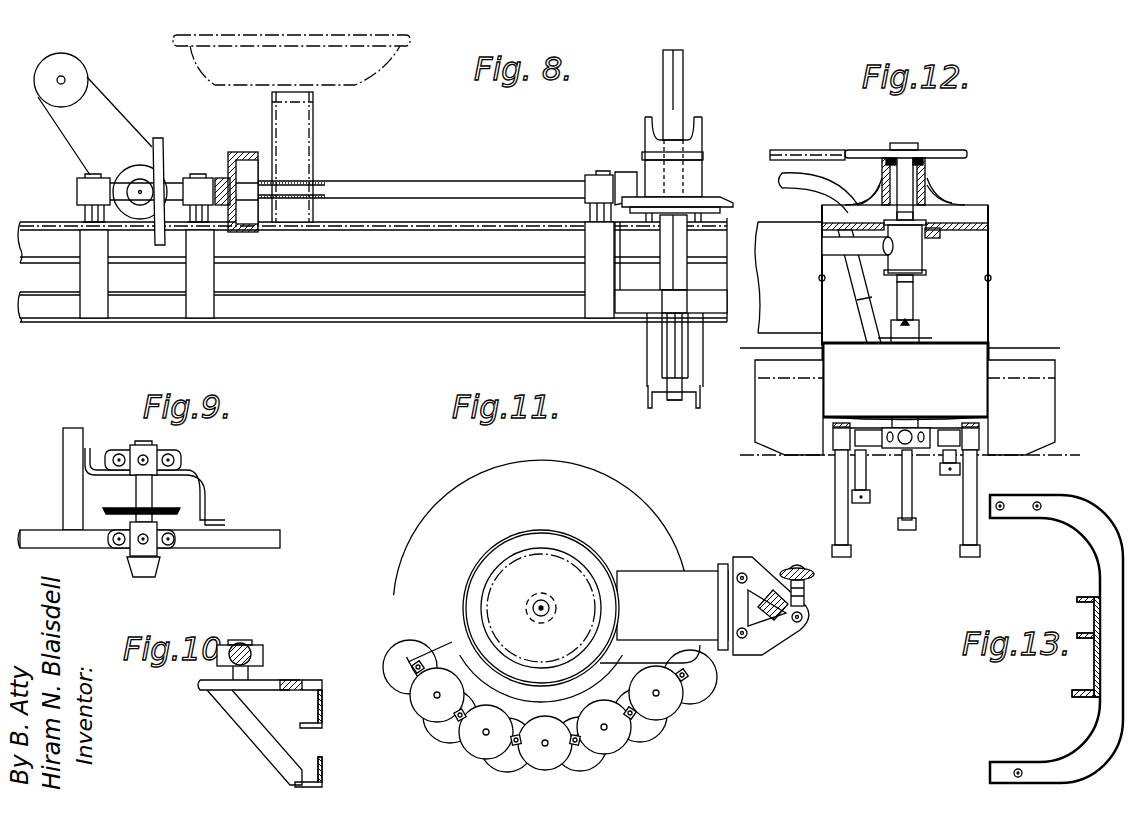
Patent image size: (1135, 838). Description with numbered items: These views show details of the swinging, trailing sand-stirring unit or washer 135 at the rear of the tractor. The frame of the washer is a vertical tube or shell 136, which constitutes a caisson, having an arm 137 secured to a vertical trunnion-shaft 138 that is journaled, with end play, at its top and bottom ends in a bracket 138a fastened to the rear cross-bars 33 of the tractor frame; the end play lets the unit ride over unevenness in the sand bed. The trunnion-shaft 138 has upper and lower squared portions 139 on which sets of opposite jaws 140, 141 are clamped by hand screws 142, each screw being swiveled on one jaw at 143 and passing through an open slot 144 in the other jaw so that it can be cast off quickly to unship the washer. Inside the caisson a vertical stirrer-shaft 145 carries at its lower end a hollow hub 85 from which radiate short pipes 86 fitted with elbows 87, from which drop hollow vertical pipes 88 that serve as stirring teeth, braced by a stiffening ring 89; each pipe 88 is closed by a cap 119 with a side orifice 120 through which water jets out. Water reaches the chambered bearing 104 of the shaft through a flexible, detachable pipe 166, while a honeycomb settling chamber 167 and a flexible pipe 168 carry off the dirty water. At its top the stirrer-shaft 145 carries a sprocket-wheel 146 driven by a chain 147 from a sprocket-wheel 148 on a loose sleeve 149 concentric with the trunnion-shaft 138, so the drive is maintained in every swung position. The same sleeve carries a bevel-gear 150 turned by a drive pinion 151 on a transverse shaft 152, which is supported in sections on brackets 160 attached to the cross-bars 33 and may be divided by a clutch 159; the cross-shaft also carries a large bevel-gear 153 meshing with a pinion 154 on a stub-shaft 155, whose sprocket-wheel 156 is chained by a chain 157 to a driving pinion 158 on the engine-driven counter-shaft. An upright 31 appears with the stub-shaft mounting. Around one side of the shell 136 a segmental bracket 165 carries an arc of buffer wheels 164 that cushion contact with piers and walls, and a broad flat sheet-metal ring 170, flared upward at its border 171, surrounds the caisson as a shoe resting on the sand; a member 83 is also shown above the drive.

In FIG. 9, the upright post 31 is at (75, 428).
In FIG. 8, the rear cross-bars 33 is at (372, 270).
In FIG. 9, the rear cross-bars 33 is at (283, 540).
In FIG. 10, the rear cross-bars 33 is at (322, 745).
In FIG. 13, the rear cross-bars 33 is at (1080, 640).
In FIG. 8, the dish 83 is at (353, 38).
In FIG. 12, the hollow head or hub 85 is at (890, 448).
In FIG. 12, the short pipes 86 is at (868, 428).
In FIG. 12, the elbows 87 is at (833, 440).
In FIG. 12, the vertical pipes 88 is at (963, 478).
In FIG. 12, the stiffening ring 89 is at (975, 422).
In FIG. 12, the chambered bearing 104 is at (922, 268).
In FIG. 12, the cap 119 is at (928, 528).
In FIG. 12, the orifice 120 is at (866, 506).
In FIG. 12, the trailing washer 135 is at (1038, 278).
In FIG. 12, the vertical tube or shell 136 is at (988, 245).
In FIG. 11, the vertical tube or shell 136 is at (518, 535).
In FIG. 12, the arm 137 is at (788, 277).
In FIG. 11, the arm 137 is at (672, 607).
In FIG. 8, the trunnion-shaft 138 is at (686, 74).
In FIG. 8, the bracket 138a is at (703, 390).
In FIG. 13, the bracket 138a is at (1100, 550).
In FIG. 8, the squared portions 139 is at (662, 240).
In FIG. 11, the jaw 140 is at (758, 575).
In FIG. 11, the jaw 141 is at (762, 650).
In FIG. 11, the hand screw 142 is at (814, 578).
In FIG. 11, the swivel 143 is at (802, 625).
In FIG. 11, the open slot 144 is at (806, 598).
In FIG. 12, the stirrer-shaft 145 is at (920, 306).
In FIG. 11, the stirrer-shaft 145 is at (560, 580).
In FIG. 12, the sprocket-wheel 146 is at (948, 152).
In FIG. 11, the sprocket-wheel 146 is at (486, 575).
In FIG. 12, the drive chain 147 is at (796, 143).
In FIG. 8, the sprocket-wheel 148 is at (702, 152).
In FIG. 8, the loose sleeve 149 is at (690, 182).
In FIG. 8, the bevel-gear 150 is at (725, 210).
In FIG. 8, the drive pinion 151 is at (627, 176).
In FIG. 8, the transverse shaft 152 is at (500, 175).
In FIG. 10, the transverse shaft 152 is at (250, 645).
In FIG. 8, the large bevel-gear 153 is at (160, 140).
In FIG. 8, the drive pinion 154 is at (138, 165).
In FIG. 9, the drive pinion 154 is at (160, 572).
In FIG. 9, the stub-shaft 155 is at (137, 495).
In FIG. 8, the sprocket-wheel 156 is at (175, 176).
In FIG. 9, the sprocket-wheel 156 is at (192, 506).
In FIG. 8, the chain 157 is at (117, 104).
In FIG. 8, the driving pinion 158 is at (74, 103).
In FIG. 8, the clutch 159 is at (240, 152).
In FIG. 11, the clutch 159 is at (782, 620).
In FIG. 8, the brackets 160 is at (170, 272).
In FIG. 10, the brackets 160 is at (248, 724).
In FIG. 11, the buffer wheels 164 is at (633, 738).
In FIG. 11, the segmental bracket 165 is at (450, 648).
In FIG. 12, the pipe 166 is at (822, 275).
In FIG. 12, the honeycomb settling chamber 167 is at (905, 381).
In FIG. 12, the pipe 168 is at (855, 298).
In FIG. 12, the sheet-metal ring 170 is at (1045, 445).
In FIG. 11, the sheet-metal ring 170 is at (460, 490).
In FIG. 12, the flared border 171 is at (775, 457).